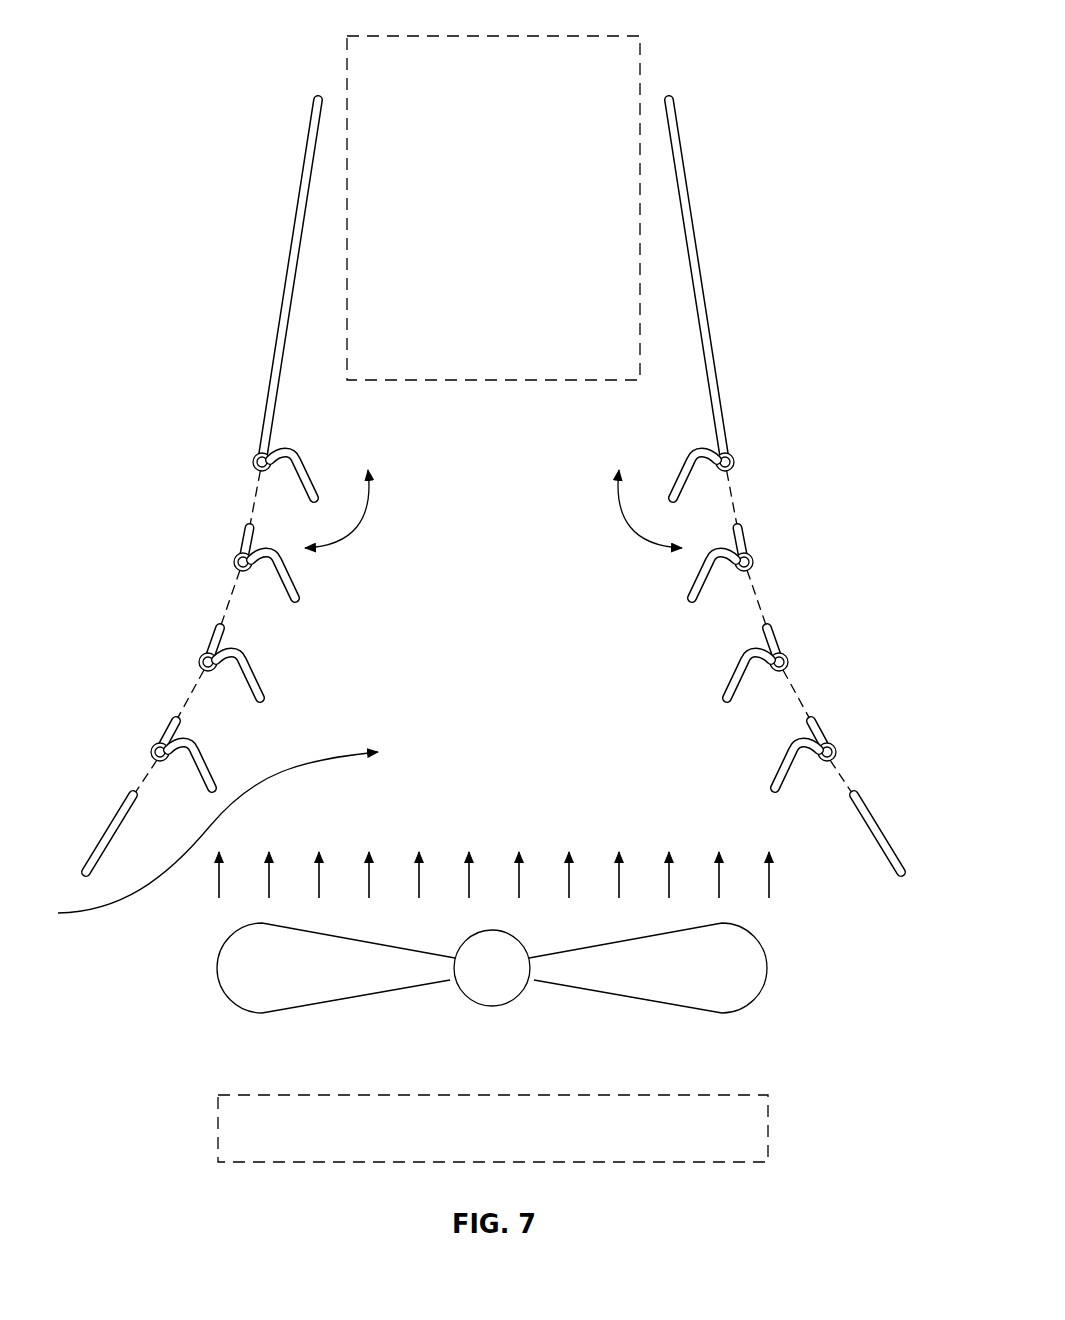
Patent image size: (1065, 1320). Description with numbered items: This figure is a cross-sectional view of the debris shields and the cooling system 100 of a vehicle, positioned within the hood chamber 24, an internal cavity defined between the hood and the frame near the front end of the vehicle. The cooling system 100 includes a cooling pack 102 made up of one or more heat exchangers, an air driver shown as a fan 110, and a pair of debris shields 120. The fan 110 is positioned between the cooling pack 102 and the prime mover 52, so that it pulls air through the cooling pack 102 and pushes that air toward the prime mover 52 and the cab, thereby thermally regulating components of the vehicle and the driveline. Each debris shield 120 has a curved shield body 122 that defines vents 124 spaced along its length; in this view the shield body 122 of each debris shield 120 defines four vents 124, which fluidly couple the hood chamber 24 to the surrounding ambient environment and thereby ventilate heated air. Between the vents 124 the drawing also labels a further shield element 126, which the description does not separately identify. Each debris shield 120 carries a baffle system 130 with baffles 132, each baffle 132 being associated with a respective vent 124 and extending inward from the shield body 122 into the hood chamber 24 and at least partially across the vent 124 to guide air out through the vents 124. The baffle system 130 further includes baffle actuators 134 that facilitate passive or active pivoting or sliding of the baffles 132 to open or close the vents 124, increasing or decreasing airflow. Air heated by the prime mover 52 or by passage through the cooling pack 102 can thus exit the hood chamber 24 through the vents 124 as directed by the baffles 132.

The cooling system 100 is at (193, 46).
The prime mover 52 is at (586, 37).
The cooling pack 102 is at (692, 1095).
The fan 110 is at (620, 976).
The hood chamber 24 is at (398, 842).
The debris shields 120 is at (297, 218).
The shield body 122 is at (112, 832).
The vents 124 is at (240, 505).
The rigid tube segment 126 is at (228, 597).
The baffle system 130 is at (306, 618).
The baffles 132 is at (284, 455).
The baffle actuators 134 is at (255, 462).